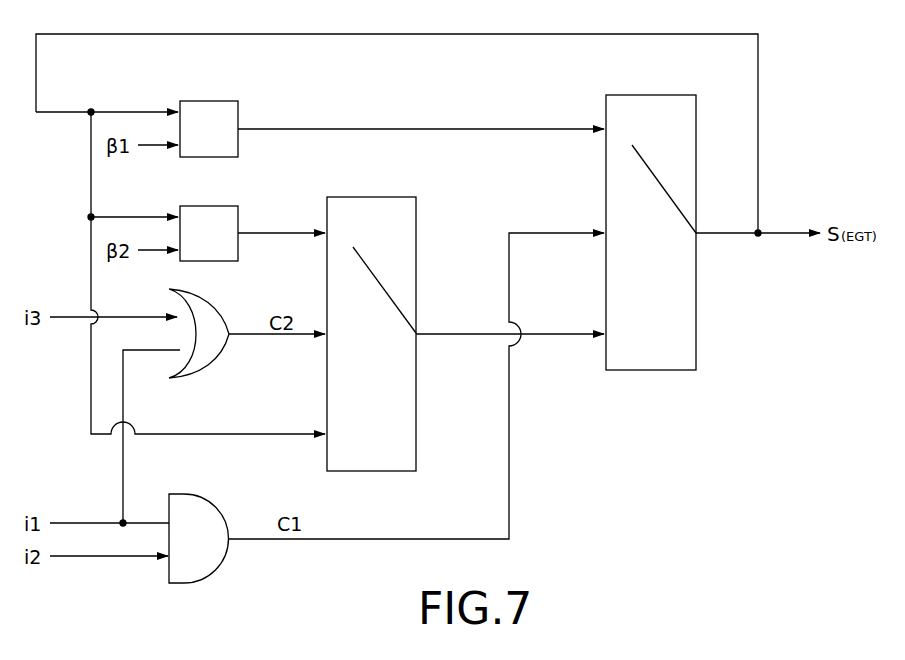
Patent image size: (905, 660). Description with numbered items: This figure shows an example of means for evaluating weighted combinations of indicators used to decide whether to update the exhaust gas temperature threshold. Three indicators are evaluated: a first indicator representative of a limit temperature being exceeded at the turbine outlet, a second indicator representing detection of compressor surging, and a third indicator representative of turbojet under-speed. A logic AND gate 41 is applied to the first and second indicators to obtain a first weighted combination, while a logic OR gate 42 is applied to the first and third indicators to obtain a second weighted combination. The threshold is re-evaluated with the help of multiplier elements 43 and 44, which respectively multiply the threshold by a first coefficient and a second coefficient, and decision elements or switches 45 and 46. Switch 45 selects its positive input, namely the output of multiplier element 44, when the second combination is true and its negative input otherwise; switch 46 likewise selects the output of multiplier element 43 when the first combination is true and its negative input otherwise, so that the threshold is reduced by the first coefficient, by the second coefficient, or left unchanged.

The logic AND gate 41 is at (220, 512).
The logic OR gate 42 is at (222, 314).
The multiplier element 43 is at (209, 129).
The multiplier element 44 is at (209, 233).
The decision element 45 is at (416, 228).
The decision element 46 is at (696, 125).